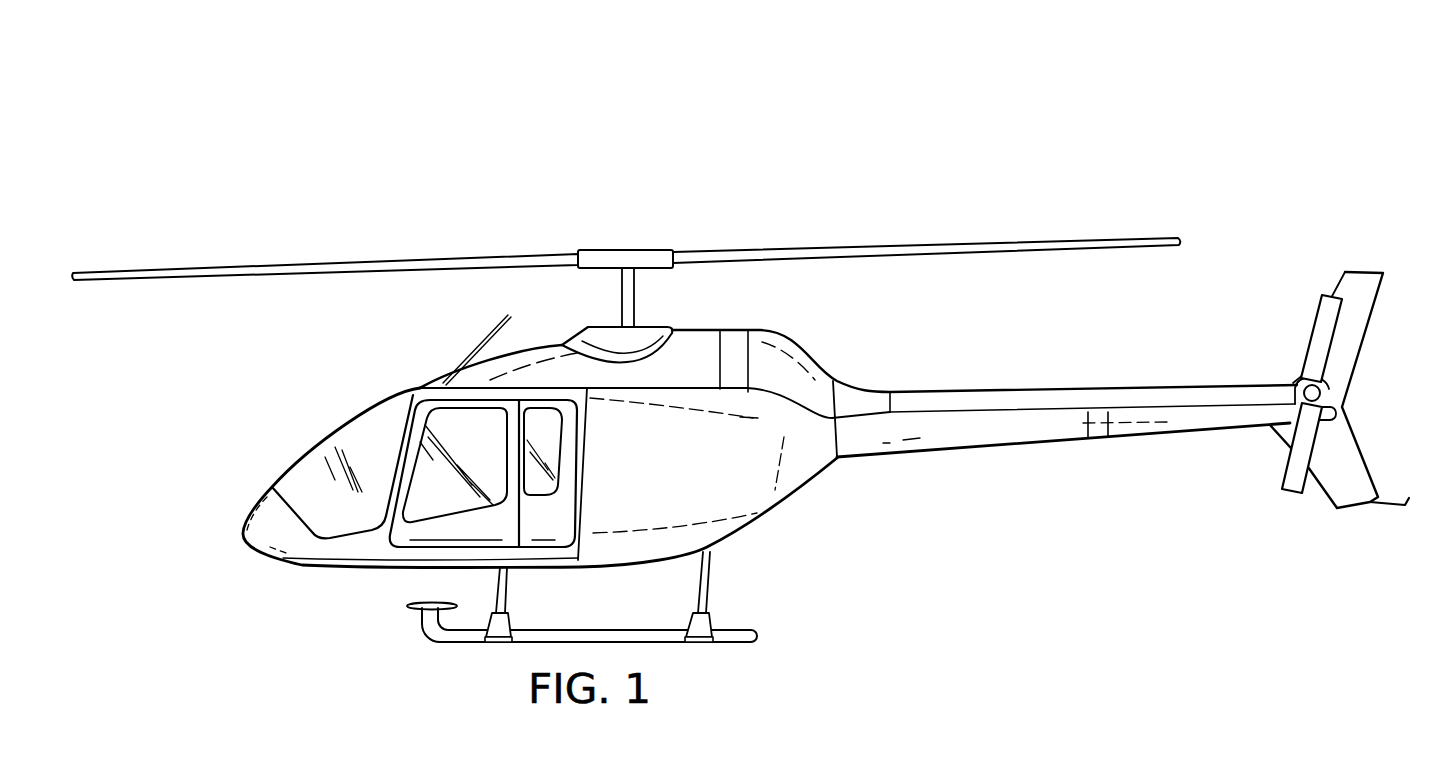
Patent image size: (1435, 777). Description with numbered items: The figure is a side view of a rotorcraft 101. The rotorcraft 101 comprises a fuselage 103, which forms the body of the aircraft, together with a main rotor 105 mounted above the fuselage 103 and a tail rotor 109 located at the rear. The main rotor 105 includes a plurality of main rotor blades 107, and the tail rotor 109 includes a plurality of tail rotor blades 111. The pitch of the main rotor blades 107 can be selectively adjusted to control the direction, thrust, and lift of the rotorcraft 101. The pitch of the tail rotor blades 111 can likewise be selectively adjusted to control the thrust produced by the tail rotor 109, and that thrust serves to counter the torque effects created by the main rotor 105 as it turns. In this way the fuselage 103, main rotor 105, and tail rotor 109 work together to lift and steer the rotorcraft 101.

The rotorcraft 101 is at (284, 101).
The fuselage 103 is at (293, 565).
The main rotor 105 is at (655, 248).
The main rotor blades 107 is at (927, 245).
The tail rotor 109 is at (1330, 392).
The tail rotor blades 111 is at (1290, 492).